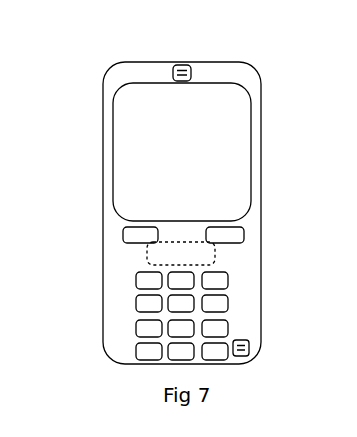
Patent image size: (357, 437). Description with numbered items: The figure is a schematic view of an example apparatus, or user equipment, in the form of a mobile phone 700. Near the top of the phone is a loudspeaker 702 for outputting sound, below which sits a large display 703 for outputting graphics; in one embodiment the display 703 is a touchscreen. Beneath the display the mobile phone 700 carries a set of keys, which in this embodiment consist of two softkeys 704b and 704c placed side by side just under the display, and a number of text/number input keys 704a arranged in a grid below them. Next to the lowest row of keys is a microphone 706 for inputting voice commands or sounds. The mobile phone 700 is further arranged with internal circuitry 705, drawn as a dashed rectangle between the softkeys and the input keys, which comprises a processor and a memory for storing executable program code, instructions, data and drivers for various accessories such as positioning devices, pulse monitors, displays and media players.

The mobile phone 700 is at (90, 103).
The loudspeaker 702 is at (182, 64).
The display 703 is at (252, 143).
The text/number input keys 704a is at (136, 280).
The softkey 704b is at (123, 235).
The softkey 704c is at (245, 239).
The internal circuitry 705 is at (213, 247).
The microphone 706 is at (250, 354).